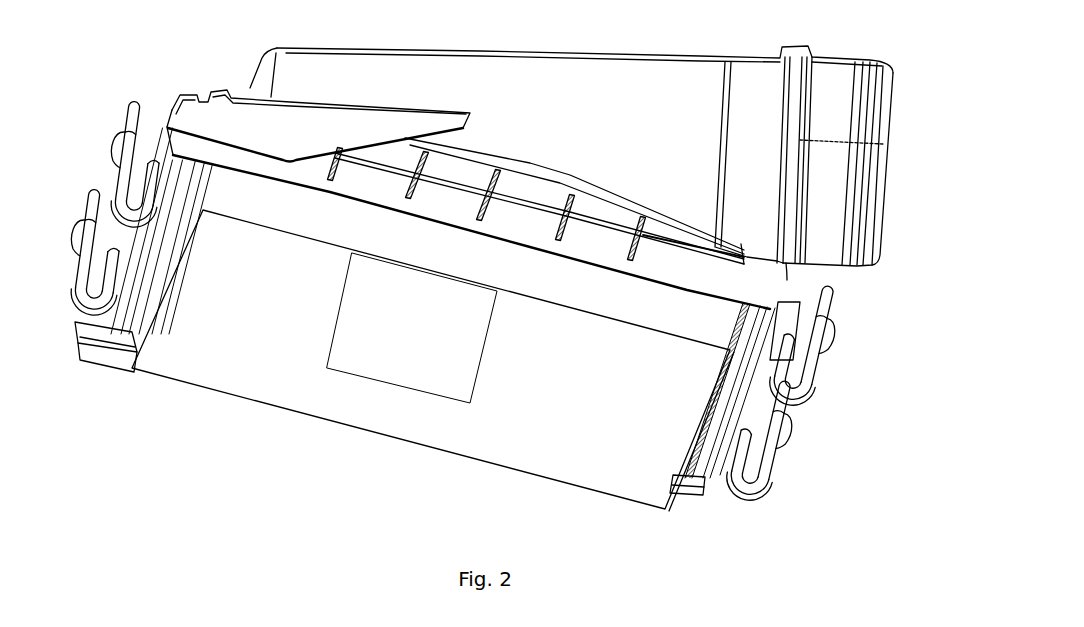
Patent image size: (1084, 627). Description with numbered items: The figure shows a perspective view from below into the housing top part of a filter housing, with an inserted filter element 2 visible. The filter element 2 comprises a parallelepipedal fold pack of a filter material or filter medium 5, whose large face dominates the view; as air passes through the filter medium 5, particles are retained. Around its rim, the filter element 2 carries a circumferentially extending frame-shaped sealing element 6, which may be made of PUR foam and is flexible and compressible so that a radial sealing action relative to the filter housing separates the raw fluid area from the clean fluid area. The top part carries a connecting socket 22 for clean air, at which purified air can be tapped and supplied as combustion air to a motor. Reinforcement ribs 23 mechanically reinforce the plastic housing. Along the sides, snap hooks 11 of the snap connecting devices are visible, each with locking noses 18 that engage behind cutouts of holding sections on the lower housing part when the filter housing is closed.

The filter element 2 is at (455, 462).
The filter medium 5 is at (550, 467).
The sealing element 6 is at (130, 323).
The snap hooks 11 is at (93, 188).
The locking noses 18 is at (133, 147).
The connecting socket 22 is at (890, 155).
The reinforcement ribs 23 is at (565, 213).